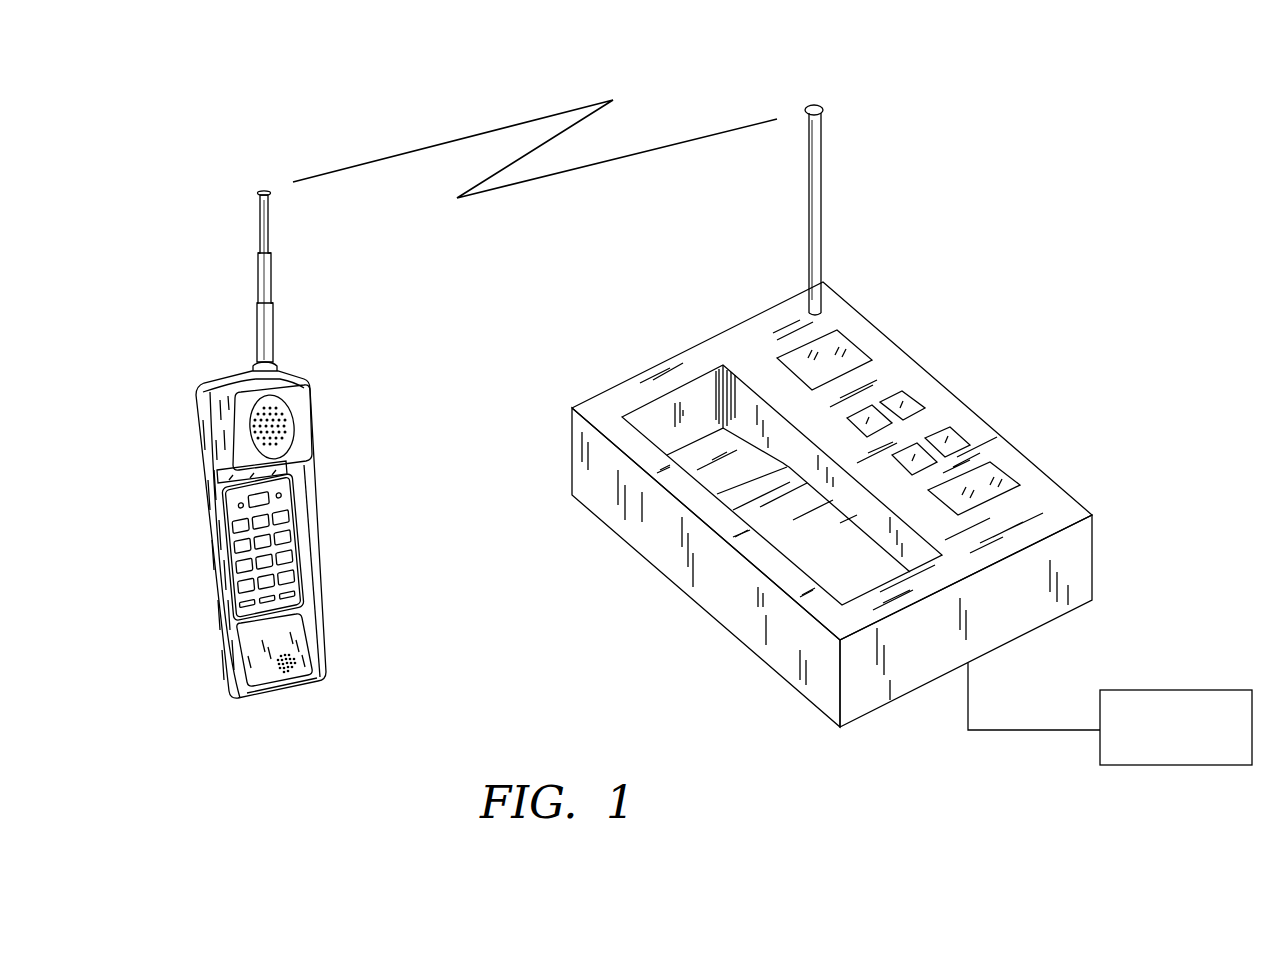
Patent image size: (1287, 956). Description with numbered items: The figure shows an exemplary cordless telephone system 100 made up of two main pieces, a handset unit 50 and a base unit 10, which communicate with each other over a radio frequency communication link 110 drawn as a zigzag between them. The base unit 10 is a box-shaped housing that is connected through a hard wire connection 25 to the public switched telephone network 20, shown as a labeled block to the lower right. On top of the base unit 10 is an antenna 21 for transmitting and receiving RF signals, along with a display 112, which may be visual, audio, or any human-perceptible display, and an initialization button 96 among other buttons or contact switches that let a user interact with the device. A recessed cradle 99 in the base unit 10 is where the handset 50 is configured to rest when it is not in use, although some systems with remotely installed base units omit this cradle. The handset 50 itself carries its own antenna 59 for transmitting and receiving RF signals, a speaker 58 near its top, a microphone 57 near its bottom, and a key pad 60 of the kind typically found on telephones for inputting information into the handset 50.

The base unit 10 is at (832, 416).
The public switched telephone network 20 is at (1177, 688).
The antenna 21 is at (818, 223).
The hard wire connection 25 is at (1035, 734).
The handset unit 50 is at (294, 435).
The microphone 57 is at (293, 673).
The speaker 58 is at (283, 418).
The antenna 59 is at (263, 190).
The key pad 60 is at (285, 560).
The initialization button 96 is at (912, 397).
The cradle 99 is at (712, 482).
The cordless telephone system 100 is at (712, 95).
The radio frequency communication link 110 is at (412, 112).
The display 112 is at (998, 467).